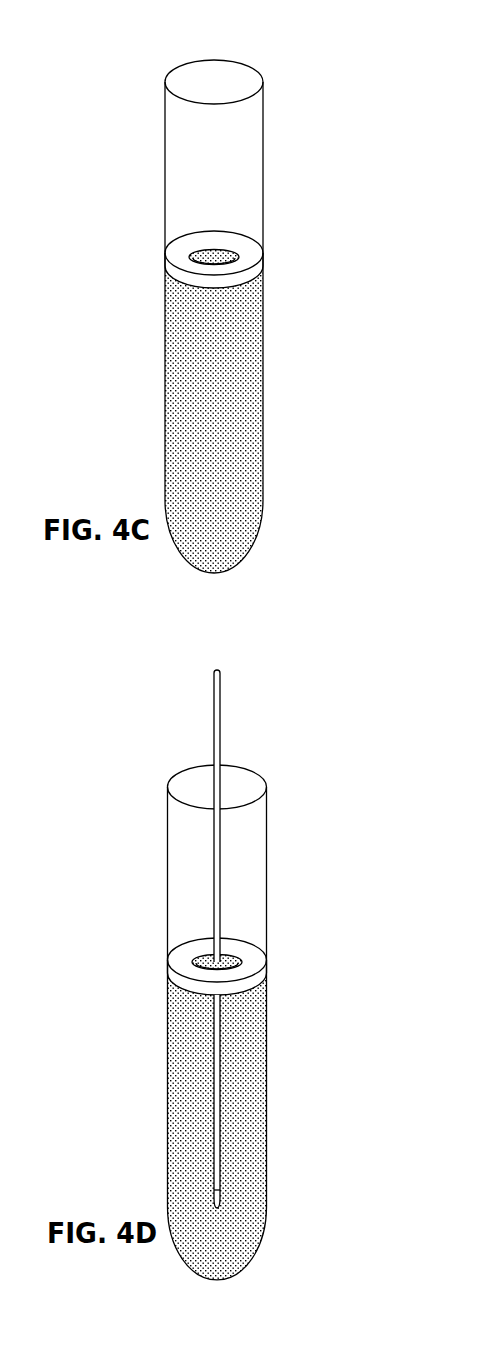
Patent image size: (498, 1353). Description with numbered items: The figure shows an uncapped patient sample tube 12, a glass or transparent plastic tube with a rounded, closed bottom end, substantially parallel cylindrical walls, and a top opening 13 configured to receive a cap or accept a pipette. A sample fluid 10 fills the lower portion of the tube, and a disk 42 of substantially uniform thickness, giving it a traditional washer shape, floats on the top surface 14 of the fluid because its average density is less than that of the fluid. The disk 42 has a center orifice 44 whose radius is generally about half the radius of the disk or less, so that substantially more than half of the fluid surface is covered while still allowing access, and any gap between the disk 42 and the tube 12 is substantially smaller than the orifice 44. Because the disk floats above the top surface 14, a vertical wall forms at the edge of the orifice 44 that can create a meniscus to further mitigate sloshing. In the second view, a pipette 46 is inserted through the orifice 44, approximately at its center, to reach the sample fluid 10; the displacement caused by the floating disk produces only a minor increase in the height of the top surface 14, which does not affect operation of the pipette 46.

In FIG. 4C, the sample fluid 10 is at (247, 375).
In FIG. 4D, the sample fluid 10 is at (247, 1083).
In FIG. 4C, the sample tube 12 is at (263, 152).
In FIG. 4D, the sample tube 12 is at (266, 863).
In FIG. 4C, the top opening 13 is at (227, 80).
In FIG. 4D, the top opening 13 is at (228, 790).
In FIG. 4C, the top surface 14 is at (213, 258).
In FIG. 4D, the top surface 14 is at (206, 963).
In FIG. 4C, the disk 42 is at (170, 262).
In FIG. 4D, the disk 42 is at (170, 970).
In FIG. 4C, the orifice 44 is at (236, 250).
In FIG. 4D, the orifice 44 is at (237, 961).
In FIG. 4D, the pipette 46 is at (212, 713).